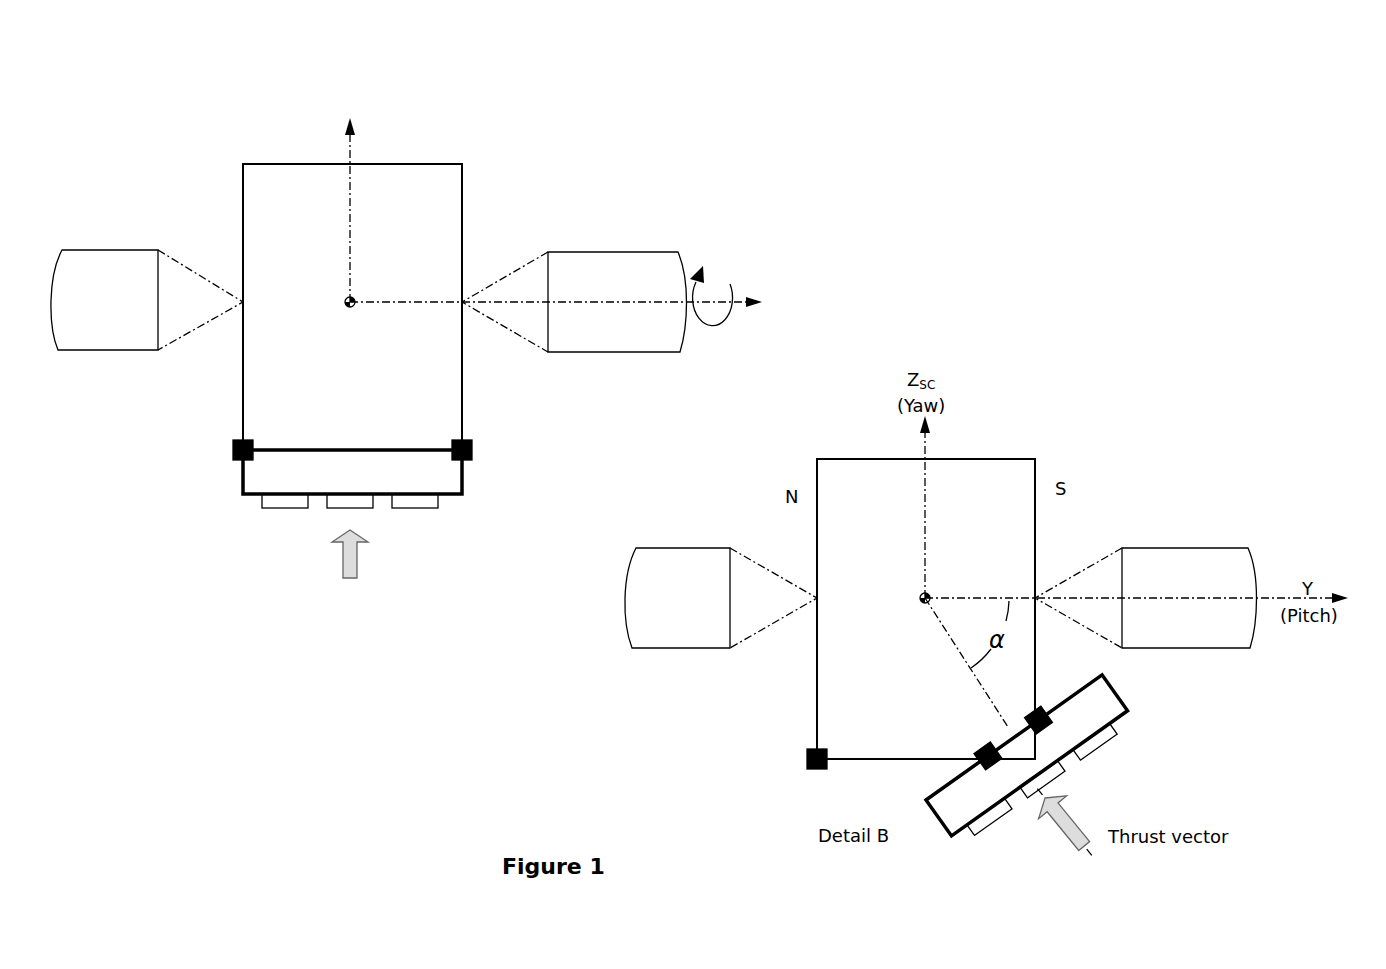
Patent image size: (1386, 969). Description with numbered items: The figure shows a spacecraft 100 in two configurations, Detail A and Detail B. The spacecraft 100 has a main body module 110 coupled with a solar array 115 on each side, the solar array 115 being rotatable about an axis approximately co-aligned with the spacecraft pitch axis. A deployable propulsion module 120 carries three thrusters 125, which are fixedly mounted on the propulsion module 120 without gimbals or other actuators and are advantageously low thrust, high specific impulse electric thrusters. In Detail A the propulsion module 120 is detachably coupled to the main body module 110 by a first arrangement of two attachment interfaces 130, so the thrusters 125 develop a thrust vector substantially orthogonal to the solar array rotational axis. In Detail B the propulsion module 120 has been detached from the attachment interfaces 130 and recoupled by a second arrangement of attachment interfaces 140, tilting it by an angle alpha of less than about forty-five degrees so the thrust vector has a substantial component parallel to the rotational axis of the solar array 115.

The spacecraft 100 is at (178, 101).
The main body module 110 is at (333, 406).
The solar array 115 is at (613, 248).
The deployable propulsion module 120 is at (243, 480).
The thrusters 125 is at (393, 508).
The attachment interface 130 is at (233, 450).
The attachment interface 140 is at (1045, 712).